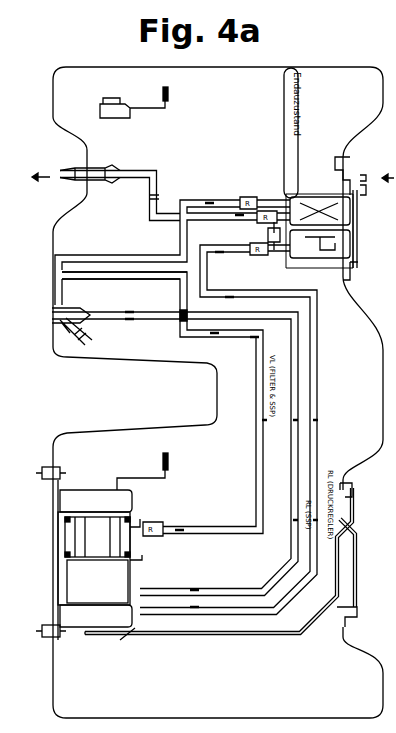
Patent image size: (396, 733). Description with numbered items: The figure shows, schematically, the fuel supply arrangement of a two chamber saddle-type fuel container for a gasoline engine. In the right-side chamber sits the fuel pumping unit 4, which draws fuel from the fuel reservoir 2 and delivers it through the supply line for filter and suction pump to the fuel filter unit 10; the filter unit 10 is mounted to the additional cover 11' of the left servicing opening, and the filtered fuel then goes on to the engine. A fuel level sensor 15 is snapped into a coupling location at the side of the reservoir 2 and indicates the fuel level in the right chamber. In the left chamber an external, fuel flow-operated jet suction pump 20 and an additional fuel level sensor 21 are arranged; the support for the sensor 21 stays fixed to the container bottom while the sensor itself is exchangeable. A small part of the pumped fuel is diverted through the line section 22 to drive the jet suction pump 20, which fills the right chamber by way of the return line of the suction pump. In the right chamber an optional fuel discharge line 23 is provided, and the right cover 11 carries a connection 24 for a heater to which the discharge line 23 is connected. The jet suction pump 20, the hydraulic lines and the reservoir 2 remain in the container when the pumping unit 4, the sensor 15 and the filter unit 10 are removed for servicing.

The fuel reservoir 2 is at (83, 488).
The fuel pumping unit 4 is at (130, 545).
The fuel filter unit 10 is at (292, 200).
The right cover 11 is at (362, 572).
The additional cover 11' is at (337, 235).
The fuel level sensor 15 is at (170, 462).
The jet suction pump 20 is at (87, 327).
The fuel level sensor 21 is at (170, 95).
The line section 22 is at (58, 288).
The fuel discharge line 23 is at (240, 637).
The heater connection 24 is at (355, 500).